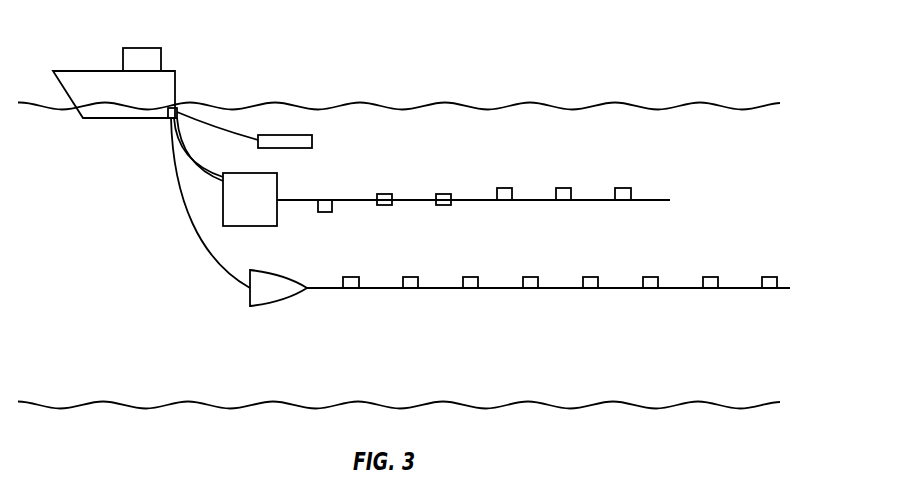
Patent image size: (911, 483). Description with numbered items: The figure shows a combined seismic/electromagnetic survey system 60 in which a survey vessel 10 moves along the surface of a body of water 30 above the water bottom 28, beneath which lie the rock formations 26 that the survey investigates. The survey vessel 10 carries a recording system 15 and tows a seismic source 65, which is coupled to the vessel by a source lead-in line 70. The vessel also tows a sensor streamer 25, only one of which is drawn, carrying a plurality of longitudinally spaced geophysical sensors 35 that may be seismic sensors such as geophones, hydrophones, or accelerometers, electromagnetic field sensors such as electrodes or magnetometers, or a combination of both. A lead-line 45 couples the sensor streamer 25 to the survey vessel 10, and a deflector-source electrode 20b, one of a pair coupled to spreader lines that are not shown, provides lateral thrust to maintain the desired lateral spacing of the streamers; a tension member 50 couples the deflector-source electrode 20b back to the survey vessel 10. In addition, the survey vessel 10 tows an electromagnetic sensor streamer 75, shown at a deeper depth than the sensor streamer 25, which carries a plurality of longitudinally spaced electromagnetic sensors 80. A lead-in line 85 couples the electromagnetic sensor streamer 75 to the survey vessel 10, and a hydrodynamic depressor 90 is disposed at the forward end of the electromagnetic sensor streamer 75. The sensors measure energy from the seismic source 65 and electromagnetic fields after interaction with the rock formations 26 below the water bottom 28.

The survey vessel 10 is at (95, 70).
The recording system 15 is at (163, 62).
The deflector-source electrode 20b is at (278, 180).
The sensor streamer 25 is at (414, 200).
The rock formations 26 is at (585, 443).
The water bottom 28 is at (613, 400).
The body of water 30 is at (134, 260).
The geophysical sensors 35 is at (442, 205).
The lead-line 45 is at (203, 166).
The tension member 50 is at (188, 159).
The combined seismic/electromagnetic survey system 60 is at (495, 56).
The seismic source 65 is at (313, 141).
The source lead-in line 70 is at (247, 137).
The electromagnetic sensor streamer 75 is at (543, 287).
The electromagnetic sensors 80 is at (351, 277).
The lead-in line 85 is at (188, 212).
The hydrodynamic depressor 90 is at (250, 298).